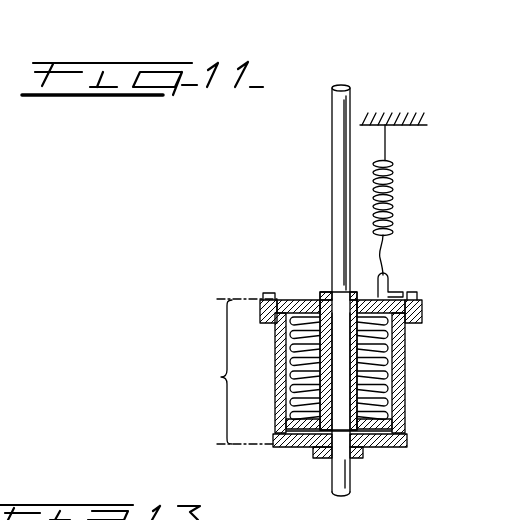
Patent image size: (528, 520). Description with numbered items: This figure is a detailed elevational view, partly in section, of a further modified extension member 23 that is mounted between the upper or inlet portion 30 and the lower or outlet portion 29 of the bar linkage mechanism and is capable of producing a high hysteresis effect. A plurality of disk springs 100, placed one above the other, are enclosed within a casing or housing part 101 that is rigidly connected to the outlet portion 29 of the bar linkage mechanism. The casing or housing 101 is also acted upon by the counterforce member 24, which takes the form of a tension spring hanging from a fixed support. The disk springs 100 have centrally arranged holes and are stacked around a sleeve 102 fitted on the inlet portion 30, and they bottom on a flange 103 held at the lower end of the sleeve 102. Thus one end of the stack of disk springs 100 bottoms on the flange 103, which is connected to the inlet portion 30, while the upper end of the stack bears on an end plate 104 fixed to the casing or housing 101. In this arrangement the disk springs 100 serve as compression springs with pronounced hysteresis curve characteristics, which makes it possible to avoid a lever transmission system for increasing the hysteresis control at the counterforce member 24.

The extension member 23 is at (235, 371).
The counterforce member 24 is at (394, 192).
The outlet portion of the bar linkage mechanism 29 is at (328, 485).
The inlet portion of the bar linkage mechanism 30 is at (332, 168).
The disk springs 100 is at (387, 358).
The casing or housing part 101 is at (410, 398).
The sleeve 102 is at (360, 292).
The flange 103 is at (397, 447).
The end plate 104 is at (302, 300).